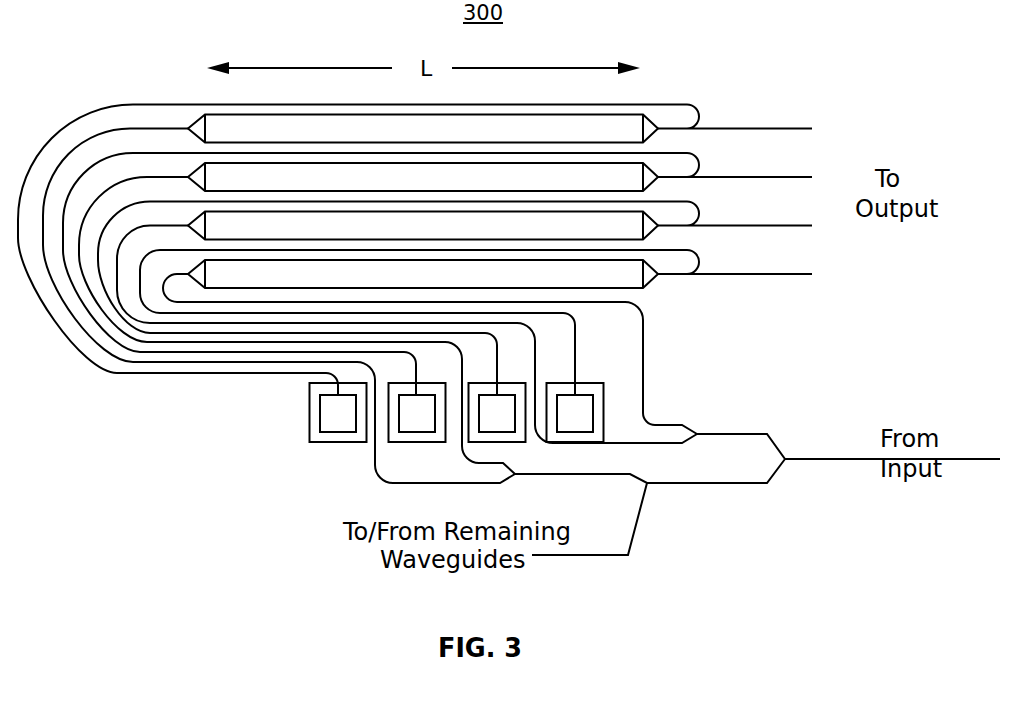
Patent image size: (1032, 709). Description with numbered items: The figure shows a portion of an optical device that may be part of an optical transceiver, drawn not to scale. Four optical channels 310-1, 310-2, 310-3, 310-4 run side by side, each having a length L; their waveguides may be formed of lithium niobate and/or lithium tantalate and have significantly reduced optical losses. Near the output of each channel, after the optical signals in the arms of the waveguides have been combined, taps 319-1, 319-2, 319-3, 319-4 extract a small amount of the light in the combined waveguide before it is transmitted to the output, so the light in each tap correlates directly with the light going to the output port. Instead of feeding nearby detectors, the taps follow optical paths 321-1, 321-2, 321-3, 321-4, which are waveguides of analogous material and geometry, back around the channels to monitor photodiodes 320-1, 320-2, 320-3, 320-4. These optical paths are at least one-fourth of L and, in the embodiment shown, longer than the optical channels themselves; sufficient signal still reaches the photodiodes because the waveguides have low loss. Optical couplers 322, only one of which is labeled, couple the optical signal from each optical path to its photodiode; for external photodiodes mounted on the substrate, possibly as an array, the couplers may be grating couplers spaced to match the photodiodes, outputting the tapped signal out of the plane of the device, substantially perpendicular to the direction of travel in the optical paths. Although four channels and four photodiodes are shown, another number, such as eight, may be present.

The optical channel 310-1 is at (423, 274).
The optical channel 310-2 is at (423, 226).
The optical channel 310-3 is at (423, 177).
The optical channel 310-4 is at (423, 129).
The tap 319-1 is at (706, 288).
The tap 319-2 is at (717, 210).
The tap 319-3 is at (716, 162).
The tap 319-4 is at (720, 116).
The monitor photodiode 320-1 is at (593, 418).
The monitor photodiode 320-2 is at (493, 432).
The monitor photodiode 320-3 is at (413, 432).
The monitor photodiode 320-4 is at (320, 432).
The optical path 321-1 is at (192, 313).
The optical path 321-2 is at (185, 333).
The optical path 321-3 is at (163, 352).
The optical path 321-4 is at (128, 373).
The optical coupler 322 is at (310, 392).